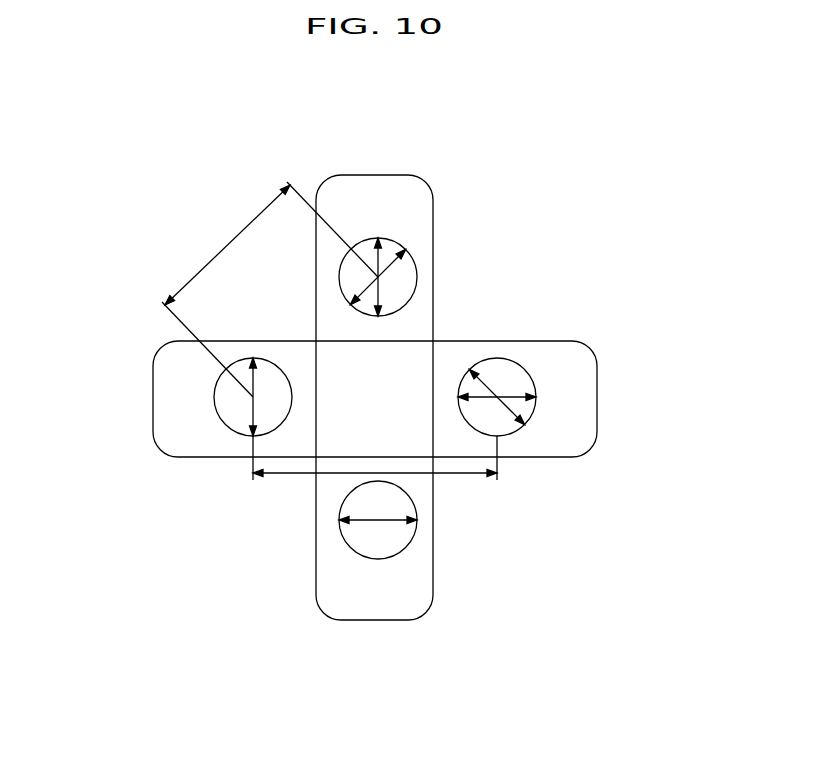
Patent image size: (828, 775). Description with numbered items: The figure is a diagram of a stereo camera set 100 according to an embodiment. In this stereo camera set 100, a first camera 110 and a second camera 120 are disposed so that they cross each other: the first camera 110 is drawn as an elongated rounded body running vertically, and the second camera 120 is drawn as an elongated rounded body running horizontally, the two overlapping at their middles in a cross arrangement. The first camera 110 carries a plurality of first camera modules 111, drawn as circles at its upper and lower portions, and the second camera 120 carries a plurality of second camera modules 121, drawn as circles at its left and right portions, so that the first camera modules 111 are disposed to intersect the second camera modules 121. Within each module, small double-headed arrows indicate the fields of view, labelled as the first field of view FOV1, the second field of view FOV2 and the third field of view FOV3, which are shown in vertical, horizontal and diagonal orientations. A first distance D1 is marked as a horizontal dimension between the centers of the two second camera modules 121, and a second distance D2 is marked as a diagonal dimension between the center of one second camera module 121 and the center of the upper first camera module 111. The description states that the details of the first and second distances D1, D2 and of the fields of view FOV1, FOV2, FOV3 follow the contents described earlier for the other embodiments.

The stereo camera set 100 is at (645, 141).
The first camera 110 is at (315, 593).
The first camera modules 111 is at (338, 276).
The second camera 120 is at (597, 399).
The second camera modules 121 is at (227, 427).
The first field of view FOV1 is at (378, 268).
The second field of view FOV2 is at (377, 522).
The third field of view FOV3 is at (402, 268).
The first distance D1 is at (375, 470).
The second distance D2 is at (270, 289).